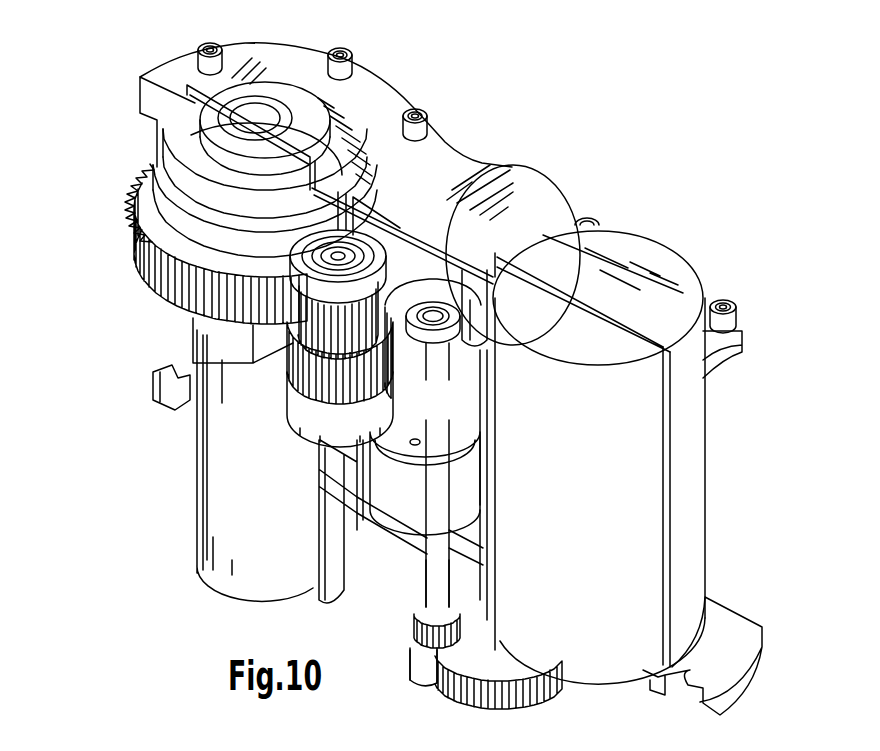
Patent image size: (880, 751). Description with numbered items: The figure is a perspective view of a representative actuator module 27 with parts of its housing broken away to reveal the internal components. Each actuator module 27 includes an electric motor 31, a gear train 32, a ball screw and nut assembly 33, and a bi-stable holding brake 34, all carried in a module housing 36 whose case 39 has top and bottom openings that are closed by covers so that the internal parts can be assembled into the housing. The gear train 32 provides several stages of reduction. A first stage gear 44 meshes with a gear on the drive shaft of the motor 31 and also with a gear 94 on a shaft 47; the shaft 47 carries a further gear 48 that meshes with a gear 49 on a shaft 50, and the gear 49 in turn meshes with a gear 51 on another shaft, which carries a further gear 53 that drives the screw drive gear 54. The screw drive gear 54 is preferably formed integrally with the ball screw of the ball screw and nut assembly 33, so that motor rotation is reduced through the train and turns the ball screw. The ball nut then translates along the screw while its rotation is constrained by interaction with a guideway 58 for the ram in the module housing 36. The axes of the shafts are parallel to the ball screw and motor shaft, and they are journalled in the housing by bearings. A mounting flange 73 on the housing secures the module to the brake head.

The actuator module 27 is at (136, 68).
The electric motor 31 is at (643, 550).
The gear train 32 is at (428, 690).
The ball screw and nut assembly 33 is at (188, 547).
The bi-stable holding brake 34 is at (412, 585).
The module housing 36 is at (701, 269).
The case 39 is at (707, 563).
The first stage gear 44 is at (517, 703).
The shaft 47 is at (433, 585).
The gear 48 is at (405, 470).
The gear 49 is at (460, 200).
The shaft 50 is at (555, 193).
The gear 51 is at (300, 388).
The gear 53 is at (313, 327).
The screw drive gear 54 is at (132, 234).
The guideway 58 is at (318, 553).
The mounting flange 73 is at (747, 697).
The gear 94 is at (418, 623).